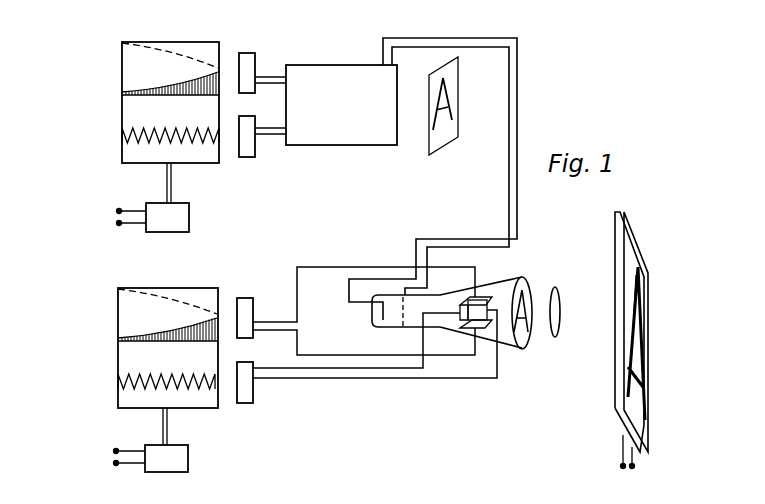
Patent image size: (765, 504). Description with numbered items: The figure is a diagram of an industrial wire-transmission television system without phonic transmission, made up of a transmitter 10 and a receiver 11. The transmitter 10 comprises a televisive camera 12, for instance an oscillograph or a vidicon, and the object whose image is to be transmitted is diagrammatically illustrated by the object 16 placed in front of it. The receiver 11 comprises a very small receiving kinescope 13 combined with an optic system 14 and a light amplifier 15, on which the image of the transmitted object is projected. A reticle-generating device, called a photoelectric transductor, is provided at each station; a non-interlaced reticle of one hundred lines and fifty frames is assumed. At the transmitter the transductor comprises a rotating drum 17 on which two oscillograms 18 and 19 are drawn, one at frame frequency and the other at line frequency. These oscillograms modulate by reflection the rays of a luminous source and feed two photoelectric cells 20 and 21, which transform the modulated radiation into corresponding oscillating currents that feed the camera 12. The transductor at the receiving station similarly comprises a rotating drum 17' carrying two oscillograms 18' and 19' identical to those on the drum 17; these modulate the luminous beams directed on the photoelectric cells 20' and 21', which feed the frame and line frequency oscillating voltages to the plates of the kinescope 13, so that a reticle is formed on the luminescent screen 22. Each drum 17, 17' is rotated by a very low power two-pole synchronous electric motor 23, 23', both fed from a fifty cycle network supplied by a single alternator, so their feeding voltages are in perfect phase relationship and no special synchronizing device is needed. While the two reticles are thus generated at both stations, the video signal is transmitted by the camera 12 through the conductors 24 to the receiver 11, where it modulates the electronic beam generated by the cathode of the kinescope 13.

The transmitter 10 is at (370, 33).
The receiver 11 is at (397, 247).
The televisive camera 12 is at (331, 74).
The receiving kinescope 13 is at (457, 300).
The optic system 14 is at (558, 290).
The light amplifier 15 is at (637, 246).
The transmitted object 16 is at (434, 148).
The rotating drum 17 is at (157, 94).
The rotating drum 17' is at (154, 339).
The oscillogram 18 is at (170, 60).
The oscillogram 18' is at (168, 306).
The oscillogram 19 is at (157, 144).
The oscillogram 19' is at (153, 389).
The photoelectric cell 20 is at (262, 64).
The photoelectric cell 20' is at (356, 311).
The photoelectric cell 21 is at (262, 144).
The photoelectric cell 21' is at (367, 365).
The luminescent screen 22 is at (525, 287).
The synchronous motor 23 is at (169, 197).
The synchronous motor 23' is at (168, 440).
The conductors 24 is at (509, 102).